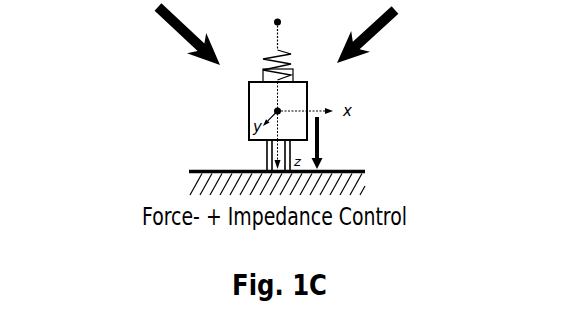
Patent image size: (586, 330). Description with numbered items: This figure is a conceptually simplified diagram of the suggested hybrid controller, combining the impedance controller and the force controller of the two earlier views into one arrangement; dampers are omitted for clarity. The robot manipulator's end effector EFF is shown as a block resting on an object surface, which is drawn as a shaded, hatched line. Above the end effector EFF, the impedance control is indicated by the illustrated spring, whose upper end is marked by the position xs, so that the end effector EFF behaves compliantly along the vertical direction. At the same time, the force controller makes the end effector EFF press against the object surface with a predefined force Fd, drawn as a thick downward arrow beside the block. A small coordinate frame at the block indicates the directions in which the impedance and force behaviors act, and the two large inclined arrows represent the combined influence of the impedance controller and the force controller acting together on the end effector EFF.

The end effector EFF is at (232, 110).
The spring reference position xs is at (271, 47).
The predefined force Fd is at (331, 143).